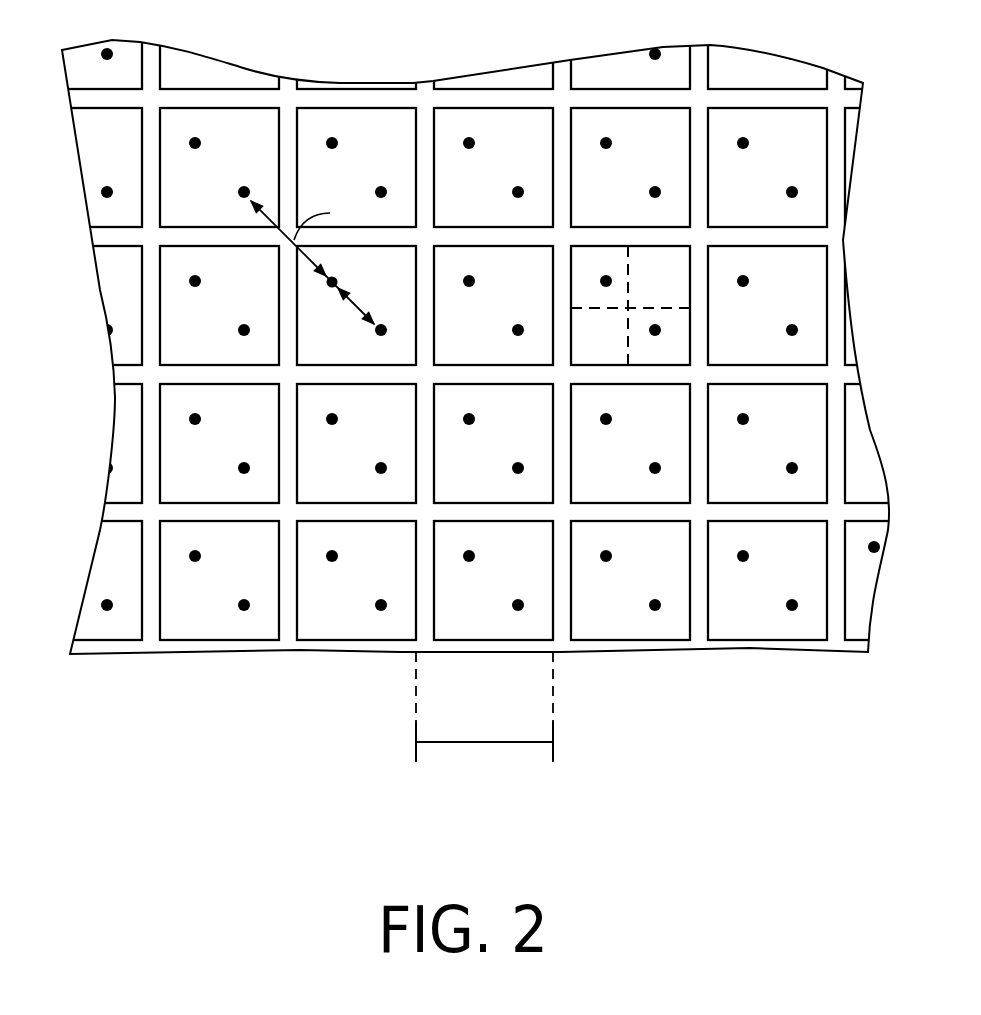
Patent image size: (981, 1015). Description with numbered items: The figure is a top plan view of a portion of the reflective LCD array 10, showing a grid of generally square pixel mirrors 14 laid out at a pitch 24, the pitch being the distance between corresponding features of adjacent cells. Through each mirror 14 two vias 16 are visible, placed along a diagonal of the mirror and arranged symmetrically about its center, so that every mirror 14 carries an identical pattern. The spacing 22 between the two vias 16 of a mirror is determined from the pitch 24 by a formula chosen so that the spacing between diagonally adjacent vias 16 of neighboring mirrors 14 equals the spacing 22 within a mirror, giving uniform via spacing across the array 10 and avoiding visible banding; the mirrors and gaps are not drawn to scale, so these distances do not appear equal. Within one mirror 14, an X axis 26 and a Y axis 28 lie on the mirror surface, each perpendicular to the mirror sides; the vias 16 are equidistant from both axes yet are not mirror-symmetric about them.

The reflective LCD array 10 is at (740, 780).
The mirror 14 is at (780, 590).
The via 16 is at (467, 425).
The spacing (X) of the vias 22 is at (353, 303).
The pitch (P) of the mirror layout 24 is at (474, 743).
The X axis 26 is at (583, 310).
The Y axis 28 is at (630, 345).